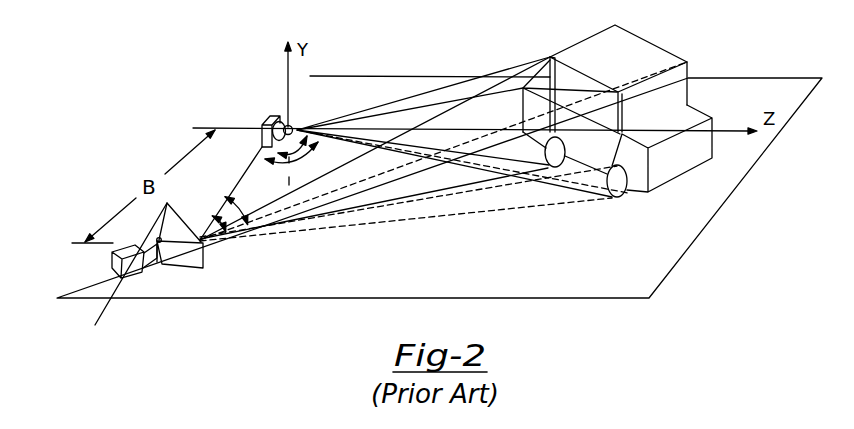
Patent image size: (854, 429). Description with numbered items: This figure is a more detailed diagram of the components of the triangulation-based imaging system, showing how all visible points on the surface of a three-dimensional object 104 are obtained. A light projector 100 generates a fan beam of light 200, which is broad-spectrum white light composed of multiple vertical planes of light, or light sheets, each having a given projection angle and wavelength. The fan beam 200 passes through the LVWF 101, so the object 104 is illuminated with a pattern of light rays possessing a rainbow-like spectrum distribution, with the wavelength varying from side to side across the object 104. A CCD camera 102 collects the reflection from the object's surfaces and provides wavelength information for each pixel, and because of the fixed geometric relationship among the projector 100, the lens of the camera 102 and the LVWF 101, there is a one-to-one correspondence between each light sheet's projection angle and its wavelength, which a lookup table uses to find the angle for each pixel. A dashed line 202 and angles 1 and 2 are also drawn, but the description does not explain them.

The light projector 100 is at (131, 272).
The LVWF 101 is at (204, 257).
The CCD camera 102 is at (271, 116).
The three-dimensional object 104 is at (661, 35).
The fan beam of light 200 is at (313, 182).
The hidden/shadowed light path 202 is at (495, 200).
The first angle 1 is at (250, 187).
The second angle 2 is at (266, 179).